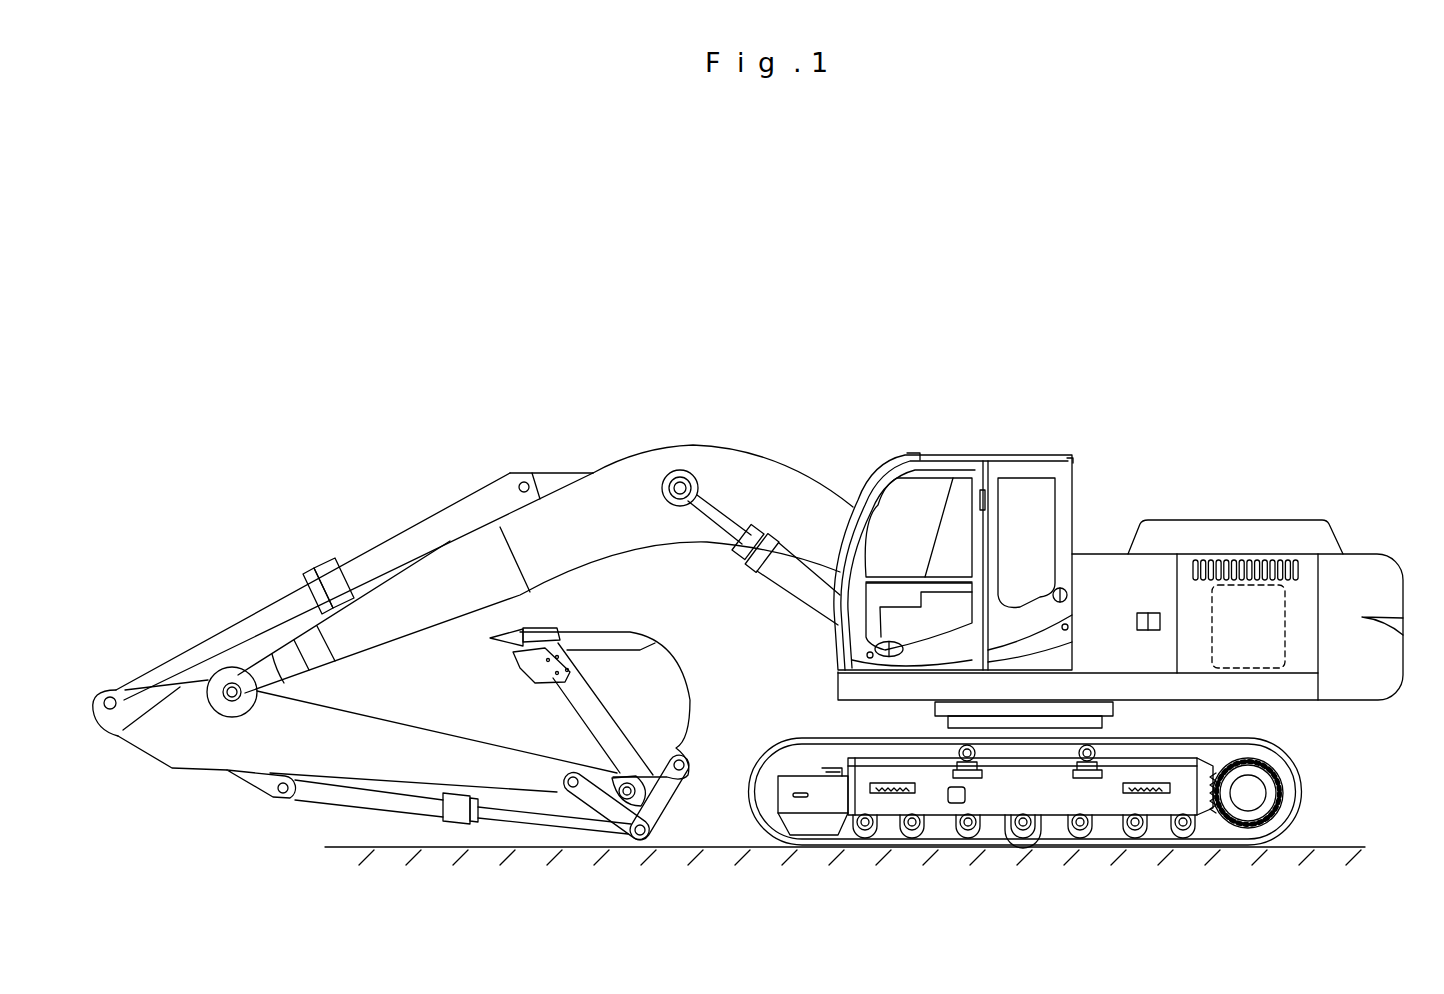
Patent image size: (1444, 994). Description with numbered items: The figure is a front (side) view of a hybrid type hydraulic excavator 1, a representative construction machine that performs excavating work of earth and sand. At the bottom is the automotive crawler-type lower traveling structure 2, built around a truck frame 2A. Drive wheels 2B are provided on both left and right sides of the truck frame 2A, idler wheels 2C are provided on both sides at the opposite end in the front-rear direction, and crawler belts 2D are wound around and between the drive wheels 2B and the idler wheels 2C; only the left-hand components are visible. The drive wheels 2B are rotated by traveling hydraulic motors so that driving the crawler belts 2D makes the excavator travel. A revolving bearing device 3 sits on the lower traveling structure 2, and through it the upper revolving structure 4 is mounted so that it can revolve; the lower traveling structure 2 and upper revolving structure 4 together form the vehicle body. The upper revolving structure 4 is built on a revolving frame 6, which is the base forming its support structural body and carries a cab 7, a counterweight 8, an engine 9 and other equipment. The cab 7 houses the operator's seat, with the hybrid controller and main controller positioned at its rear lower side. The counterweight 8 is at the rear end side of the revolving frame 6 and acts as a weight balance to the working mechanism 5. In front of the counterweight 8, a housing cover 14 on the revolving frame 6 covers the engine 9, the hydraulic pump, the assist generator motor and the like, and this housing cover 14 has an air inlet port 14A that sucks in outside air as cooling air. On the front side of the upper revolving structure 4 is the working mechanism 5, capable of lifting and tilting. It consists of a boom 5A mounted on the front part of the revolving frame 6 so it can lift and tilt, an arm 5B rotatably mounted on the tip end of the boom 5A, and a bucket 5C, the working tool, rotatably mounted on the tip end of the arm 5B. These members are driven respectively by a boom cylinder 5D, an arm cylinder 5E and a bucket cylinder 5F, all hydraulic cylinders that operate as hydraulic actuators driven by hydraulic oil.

The hydraulic excavator 1 is at (833, 396).
The lower traveling structure 2 is at (1290, 754).
The truck frame 2A is at (1057, 797).
The drive wheels 2B is at (1248, 795).
The idler wheels 2C is at (775, 795).
The crawler belts 2D is at (902, 833).
The revolving bearing device 3 is at (1117, 706).
The upper revolving structure 4 is at (1022, 448).
The working mechanism 5 is at (730, 447).
The boom 5A is at (592, 507).
The arm 5B is at (200, 770).
The bucket 5C is at (660, 690).
The boom cylinder 5D is at (785, 575).
The arm cylinder 5E is at (425, 537).
The bucket cylinder 5F is at (387, 800).
The revolving frame 6 is at (885, 688).
The cab 7 is at (930, 510).
The counterweight 8 is at (1370, 592).
The engine 9 is at (1285, 652).
The housing cover 14 is at (1185, 570).
The air inlet port 14A is at (1300, 560).